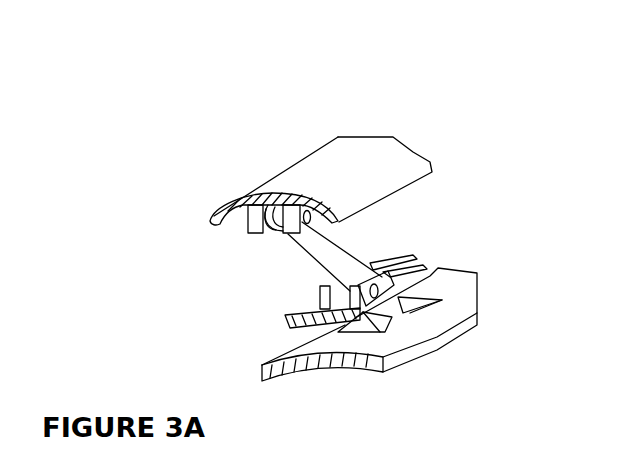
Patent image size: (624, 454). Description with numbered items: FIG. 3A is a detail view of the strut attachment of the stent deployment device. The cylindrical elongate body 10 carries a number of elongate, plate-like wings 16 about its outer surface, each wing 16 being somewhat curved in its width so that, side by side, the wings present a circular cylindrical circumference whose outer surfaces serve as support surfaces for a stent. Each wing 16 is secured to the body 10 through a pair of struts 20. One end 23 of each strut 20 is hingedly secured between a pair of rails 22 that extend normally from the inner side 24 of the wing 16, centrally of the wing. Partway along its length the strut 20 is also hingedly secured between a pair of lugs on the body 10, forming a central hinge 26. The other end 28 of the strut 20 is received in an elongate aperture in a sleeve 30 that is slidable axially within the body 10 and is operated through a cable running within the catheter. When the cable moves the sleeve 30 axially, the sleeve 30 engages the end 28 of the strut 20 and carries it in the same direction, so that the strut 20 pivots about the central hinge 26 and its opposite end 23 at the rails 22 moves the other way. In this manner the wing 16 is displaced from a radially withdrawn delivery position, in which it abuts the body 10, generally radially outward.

The elongate body 10 is at (287, 315).
The wing 16 is at (325, 163).
The strut 20 is at (327, 253).
The rails 22 is at (313, 221).
The end of strut 23 is at (280, 233).
The inner side of wing 24 is at (240, 213).
The central hinge 26 is at (432, 261).
The other end of strut 28 is at (465, 303).
The sleeve 30 is at (407, 333).